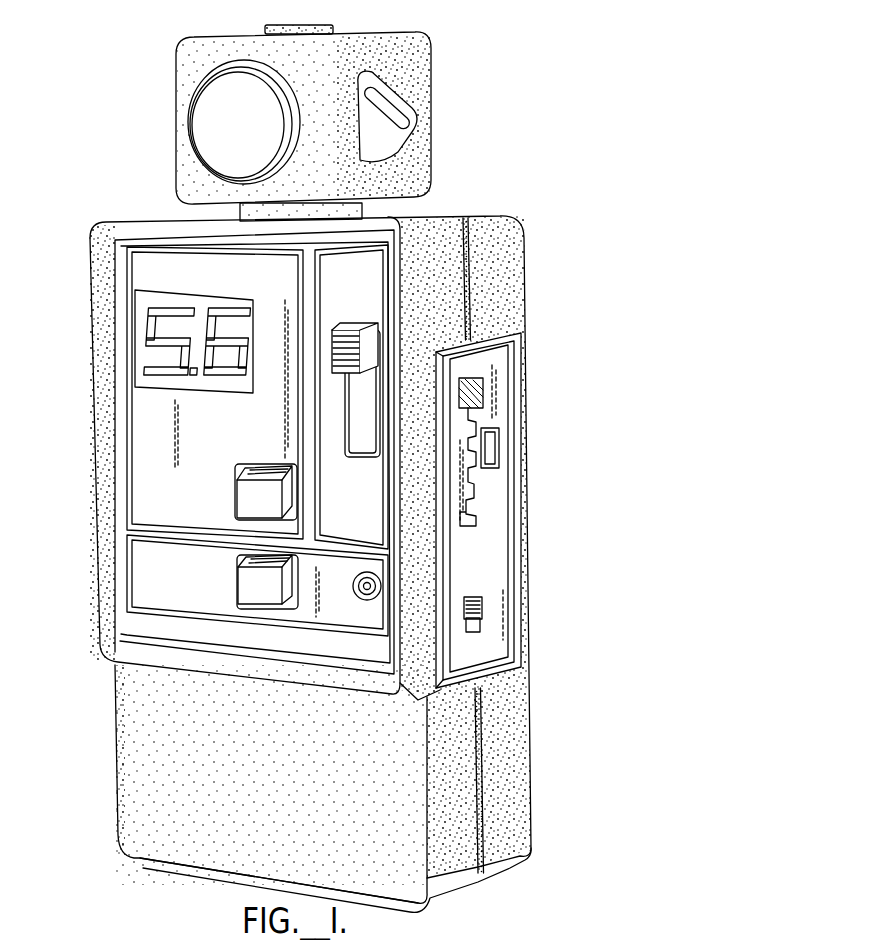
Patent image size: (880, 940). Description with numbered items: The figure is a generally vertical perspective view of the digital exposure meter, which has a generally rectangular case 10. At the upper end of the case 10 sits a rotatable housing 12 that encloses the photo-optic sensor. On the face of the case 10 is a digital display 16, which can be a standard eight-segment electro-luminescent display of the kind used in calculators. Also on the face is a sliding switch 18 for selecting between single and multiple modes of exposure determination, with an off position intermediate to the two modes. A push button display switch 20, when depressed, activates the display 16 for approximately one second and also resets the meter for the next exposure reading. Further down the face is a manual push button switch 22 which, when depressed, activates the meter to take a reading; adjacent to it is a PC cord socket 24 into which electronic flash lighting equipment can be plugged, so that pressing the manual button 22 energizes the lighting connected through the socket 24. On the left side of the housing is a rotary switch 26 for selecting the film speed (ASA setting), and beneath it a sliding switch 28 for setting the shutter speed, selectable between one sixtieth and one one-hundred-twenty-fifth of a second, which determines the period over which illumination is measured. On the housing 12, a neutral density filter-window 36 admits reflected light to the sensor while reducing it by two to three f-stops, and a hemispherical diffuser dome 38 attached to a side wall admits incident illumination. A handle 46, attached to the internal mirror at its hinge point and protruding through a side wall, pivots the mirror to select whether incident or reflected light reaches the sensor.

The case 10 is at (486, 206).
The rotatable housing 12 is at (418, 34).
The digital display 16 is at (150, 320).
The sliding switch 18 is at (350, 340).
The push button display switch 20 is at (245, 493).
The manual push button switch 22 is at (248, 577).
The PC cord socket 24 is at (381, 582).
The rotary switch 26 is at (492, 458).
The sliding switch 28 is at (478, 600).
The neutral density filter-window 36 is at (318, 25).
The hemispherical diffuser dome 38 is at (208, 107).
The handle 46 is at (420, 110).